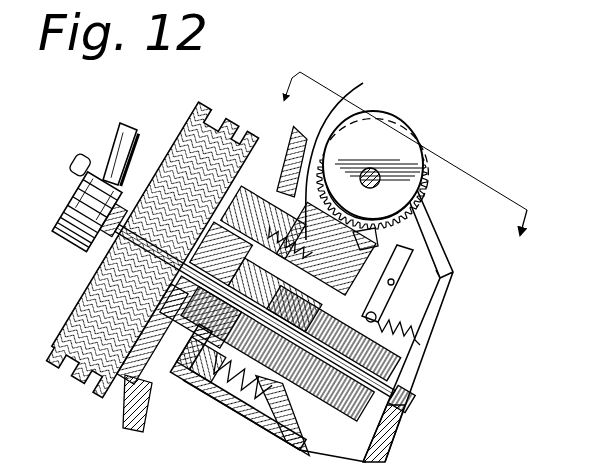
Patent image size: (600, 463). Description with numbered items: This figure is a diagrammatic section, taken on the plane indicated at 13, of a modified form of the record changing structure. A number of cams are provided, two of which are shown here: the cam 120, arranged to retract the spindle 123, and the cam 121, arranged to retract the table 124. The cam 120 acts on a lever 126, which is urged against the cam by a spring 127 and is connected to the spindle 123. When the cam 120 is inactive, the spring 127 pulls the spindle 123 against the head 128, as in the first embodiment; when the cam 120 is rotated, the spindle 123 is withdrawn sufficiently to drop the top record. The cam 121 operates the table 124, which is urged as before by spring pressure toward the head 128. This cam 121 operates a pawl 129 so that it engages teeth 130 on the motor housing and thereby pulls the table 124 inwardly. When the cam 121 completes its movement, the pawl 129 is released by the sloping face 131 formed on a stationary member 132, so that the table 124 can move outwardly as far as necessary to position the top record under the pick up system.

The section line 13- 13 is at (402, 160).
The cam 120 is at (420, 133).
The cam 121 is at (397, 120).
The spindle 123 is at (393, 368).
The table 124 is at (257, 152).
The lever 126 is at (447, 287).
The spring 127 is at (395, 333).
The head 128 is at (73, 243).
The pawl 129 is at (360, 250).
The teeth 130 is at (349, 147).
The sloping face 131 is at (283, 200).
The stationary member 132 is at (283, 206).